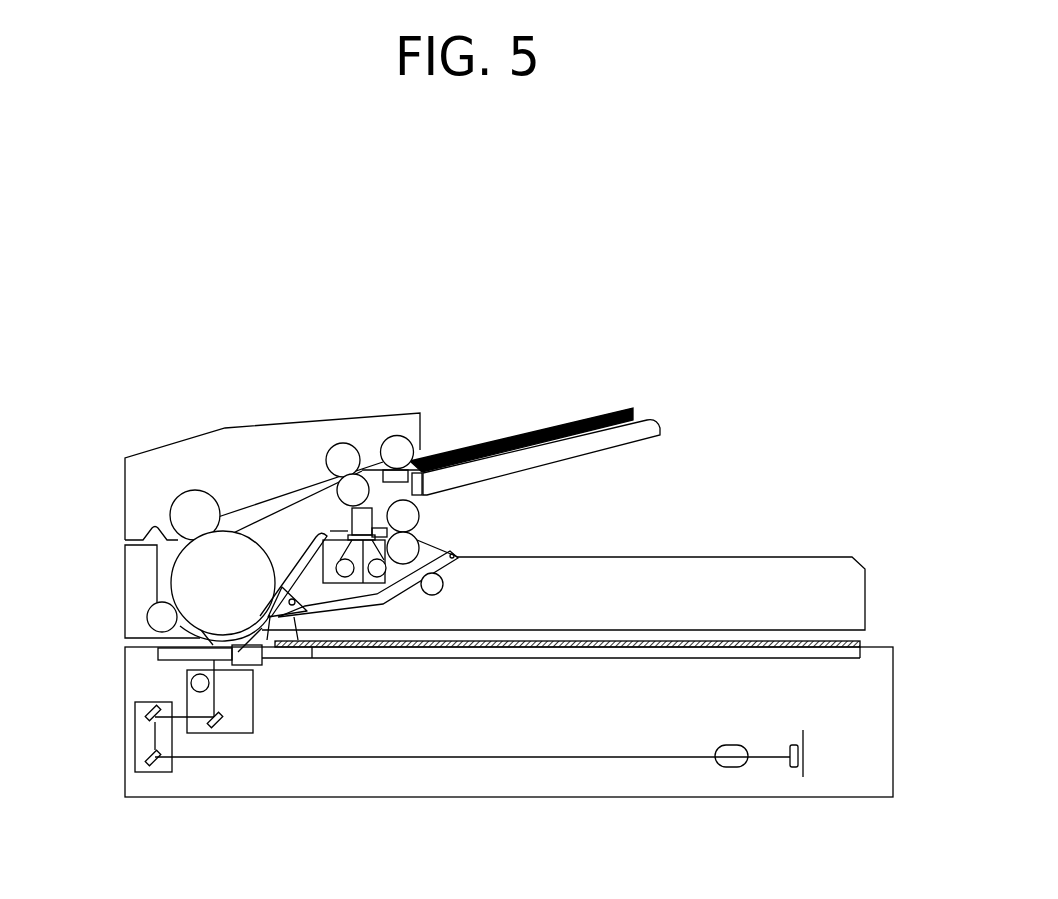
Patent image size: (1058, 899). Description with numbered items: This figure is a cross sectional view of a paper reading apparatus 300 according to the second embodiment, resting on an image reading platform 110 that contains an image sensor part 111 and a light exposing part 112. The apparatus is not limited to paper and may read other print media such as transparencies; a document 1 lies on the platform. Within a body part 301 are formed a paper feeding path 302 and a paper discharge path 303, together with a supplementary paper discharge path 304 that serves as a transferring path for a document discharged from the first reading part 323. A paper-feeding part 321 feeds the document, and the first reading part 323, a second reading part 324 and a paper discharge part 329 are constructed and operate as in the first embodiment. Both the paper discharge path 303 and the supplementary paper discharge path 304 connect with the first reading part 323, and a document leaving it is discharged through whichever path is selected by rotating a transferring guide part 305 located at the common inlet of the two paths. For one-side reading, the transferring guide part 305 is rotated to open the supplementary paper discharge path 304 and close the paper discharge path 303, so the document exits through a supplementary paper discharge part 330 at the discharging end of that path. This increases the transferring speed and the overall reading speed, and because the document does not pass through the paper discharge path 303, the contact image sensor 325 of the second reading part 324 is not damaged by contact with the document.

The paper reading apparatus 300 is at (725, 305).
The body part 301 is at (132, 487).
The paper feeding path 302 is at (258, 510).
The paper discharge path 303 is at (303, 558).
The supplementary paper discharge path 304 is at (358, 603).
The transferring guide part 305 is at (288, 613).
The paper-feeding part 321 is at (397, 452).
The first reading part 323 is at (128, 638).
The second reading part 324 is at (380, 524).
The contact image sensor 325 is at (355, 507).
The paper discharge part 329 is at (456, 556).
The supplementary paper discharge part 330 is at (443, 583).
The document 1 is at (681, 641).
The image reading platform 110 is at (843, 803).
The image sensor part 111 is at (797, 768).
The light exposing part 112 is at (253, 722).